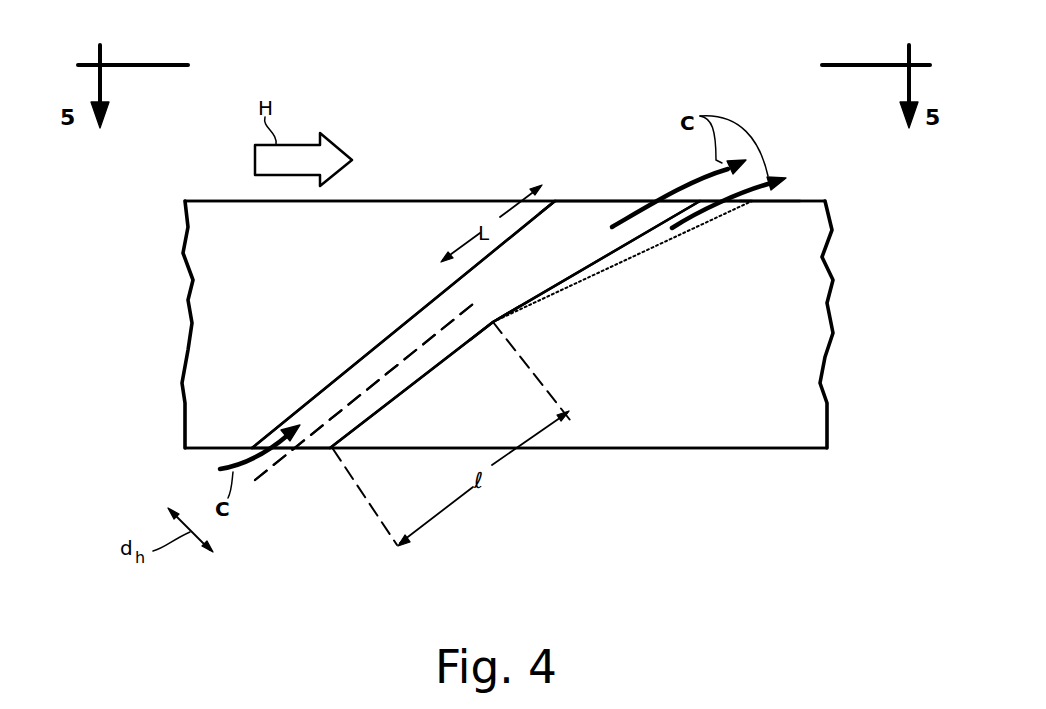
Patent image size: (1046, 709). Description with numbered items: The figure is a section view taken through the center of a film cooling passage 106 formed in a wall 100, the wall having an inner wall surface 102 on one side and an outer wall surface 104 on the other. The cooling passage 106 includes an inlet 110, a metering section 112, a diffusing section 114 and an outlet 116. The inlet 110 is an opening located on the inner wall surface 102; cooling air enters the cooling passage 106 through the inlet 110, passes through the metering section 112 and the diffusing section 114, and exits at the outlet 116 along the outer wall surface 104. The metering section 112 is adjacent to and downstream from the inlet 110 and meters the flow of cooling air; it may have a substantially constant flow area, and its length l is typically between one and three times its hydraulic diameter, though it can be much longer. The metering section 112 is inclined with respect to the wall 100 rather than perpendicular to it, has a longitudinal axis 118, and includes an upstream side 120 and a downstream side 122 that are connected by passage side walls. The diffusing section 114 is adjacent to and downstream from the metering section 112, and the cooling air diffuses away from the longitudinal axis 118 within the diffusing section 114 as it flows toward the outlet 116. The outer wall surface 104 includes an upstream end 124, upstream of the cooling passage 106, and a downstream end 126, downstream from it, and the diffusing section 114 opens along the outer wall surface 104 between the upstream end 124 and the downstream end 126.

The wall 100 is at (176, 319).
The inner wall surface 102 is at (797, 450).
The outer wall surface 104 is at (222, 200).
The film cooling passage 106 is at (378, 346).
The inlet 110 is at (318, 452).
The metering section 112 is at (390, 410).
The diffusing section 114 is at (572, 220).
The outlet 116 is at (621, 201).
The longitudinal axis 118 is at (262, 480).
The upstream side 120 is at (335, 380).
The downstream side 122 is at (447, 358).
The upstream end 124 is at (550, 200).
The downstream end 126 is at (800, 201).